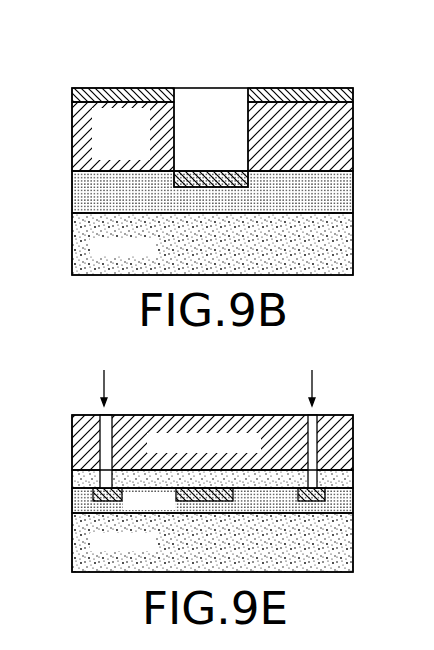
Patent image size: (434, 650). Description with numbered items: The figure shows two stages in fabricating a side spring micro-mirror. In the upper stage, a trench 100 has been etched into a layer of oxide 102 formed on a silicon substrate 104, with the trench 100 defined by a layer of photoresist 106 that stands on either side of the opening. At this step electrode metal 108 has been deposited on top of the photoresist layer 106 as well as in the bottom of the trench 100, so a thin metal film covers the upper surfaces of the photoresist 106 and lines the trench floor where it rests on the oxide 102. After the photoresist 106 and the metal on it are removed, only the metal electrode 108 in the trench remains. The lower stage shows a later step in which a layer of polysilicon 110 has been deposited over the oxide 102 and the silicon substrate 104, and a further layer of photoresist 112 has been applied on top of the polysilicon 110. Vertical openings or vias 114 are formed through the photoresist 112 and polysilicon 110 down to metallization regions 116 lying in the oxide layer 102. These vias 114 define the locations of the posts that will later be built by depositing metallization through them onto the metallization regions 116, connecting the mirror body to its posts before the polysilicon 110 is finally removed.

In FIG. 9B, the trench 100 is at (183, 168).
In FIG. 9B, the layer of oxide 102 is at (348, 188).
In FIG. 9E, the layer of oxide 102 is at (348, 502).
In FIG. 9B, the silicon substrate 104 is at (348, 243).
In FIG. 9E, the silicon substrate 104 is at (348, 551).
In FIG. 9B, the layer of photoresist 106 is at (348, 130).
In FIG. 9B, the electrode metal 108 is at (113, 89).
In FIG. 9E, the layer of polysilicon 110 is at (340, 468).
In FIG. 9E, the layer of photoresist 112 is at (191, 420).
In FIG. 9E, the vertical openings or vias 114 is at (104, 425).
In FIG. 9E, the metallization regions 116 is at (93, 496).